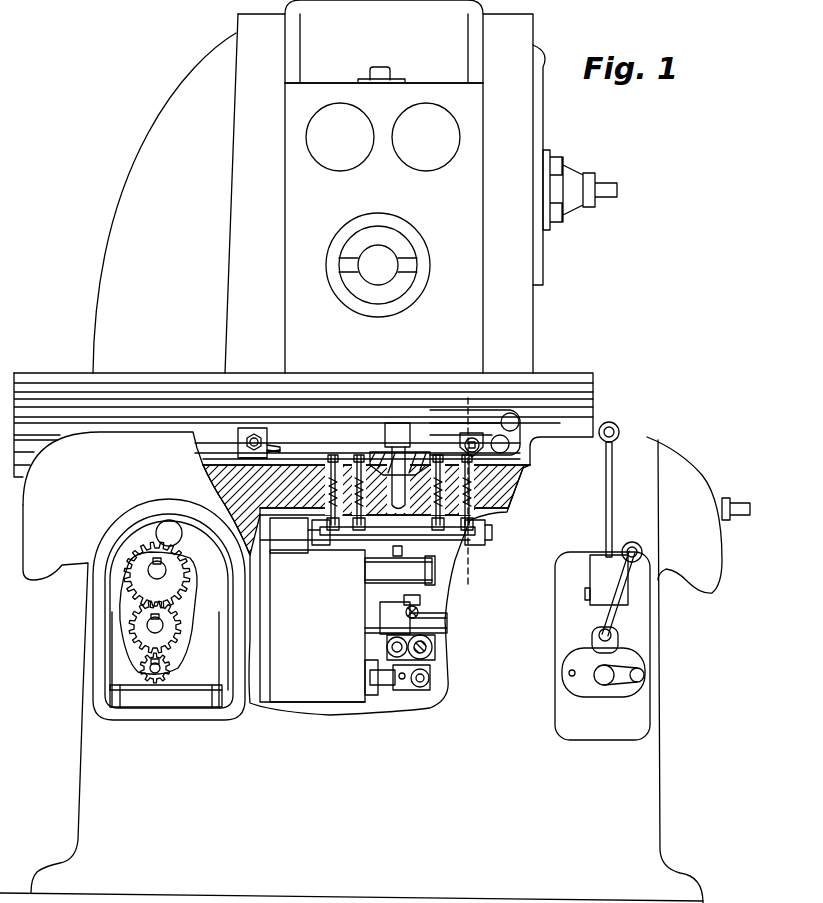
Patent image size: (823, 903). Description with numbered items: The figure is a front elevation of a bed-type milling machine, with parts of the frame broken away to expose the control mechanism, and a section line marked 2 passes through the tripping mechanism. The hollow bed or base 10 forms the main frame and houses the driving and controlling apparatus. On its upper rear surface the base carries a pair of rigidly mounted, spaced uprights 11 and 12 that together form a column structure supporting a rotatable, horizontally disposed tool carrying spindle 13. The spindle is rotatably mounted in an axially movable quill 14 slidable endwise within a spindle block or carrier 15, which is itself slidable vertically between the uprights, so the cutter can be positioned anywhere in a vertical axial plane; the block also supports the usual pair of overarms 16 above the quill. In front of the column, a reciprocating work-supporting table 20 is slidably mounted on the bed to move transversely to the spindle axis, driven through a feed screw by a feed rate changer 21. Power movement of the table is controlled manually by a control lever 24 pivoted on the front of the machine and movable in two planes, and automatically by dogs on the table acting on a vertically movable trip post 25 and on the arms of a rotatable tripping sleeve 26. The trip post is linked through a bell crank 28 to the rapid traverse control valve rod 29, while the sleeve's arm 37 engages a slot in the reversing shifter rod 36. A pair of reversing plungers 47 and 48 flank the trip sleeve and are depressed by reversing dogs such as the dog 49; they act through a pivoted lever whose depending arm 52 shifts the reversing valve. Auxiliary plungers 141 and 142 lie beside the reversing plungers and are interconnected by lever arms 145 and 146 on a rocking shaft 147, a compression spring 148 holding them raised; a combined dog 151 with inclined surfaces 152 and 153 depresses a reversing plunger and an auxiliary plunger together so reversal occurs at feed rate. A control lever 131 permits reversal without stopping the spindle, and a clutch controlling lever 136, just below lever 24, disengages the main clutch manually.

The bed or base 10 is at (86, 766).
The upright 11 is at (250, 32).
The upright 12 is at (524, 54).
The tool carrying spindle 13 is at (396, 239).
The quill 14 is at (423, 262).
The spindle block or carrier 15 is at (436, 94).
The overarms 16 is at (408, 157).
The work-supporting table 20 is at (66, 386).
The feed rate changer 21 is at (129, 656).
The control lever 24 is at (620, 428).
The trip post 25 is at (420, 412).
The tripping sleeve 26 is at (373, 450).
The bell crank 28 is at (427, 662).
The rapid traverse control valve rod 29 is at (443, 677).
The reversing shifter rod 36 is at (446, 618).
The arm 37 is at (413, 613).
The reversing trip post or plunger 47 is at (361, 458).
The reversing trip post or plunger 48 is at (446, 457).
The reversing trip dog 49 is at (507, 445).
The depending arm 52 is at (402, 554).
The control lever 131 is at (648, 681).
The clutch controlling lever 136 is at (651, 550).
The auxiliary tripping plunger 141 is at (338, 455).
The auxiliary tripping plunger 142 is at (516, 472).
The lever arm 145 is at (300, 535).
The lever arm 146 is at (486, 527).
The rocking shaft 147 is at (360, 540).
The compression spring 148 is at (472, 490).
The combined reversing dog 151 is at (283, 402).
The inclined surface 152 is at (262, 456).
The inclined surface 153 is at (258, 458).
The section line 2- 2 is at (475, 581).